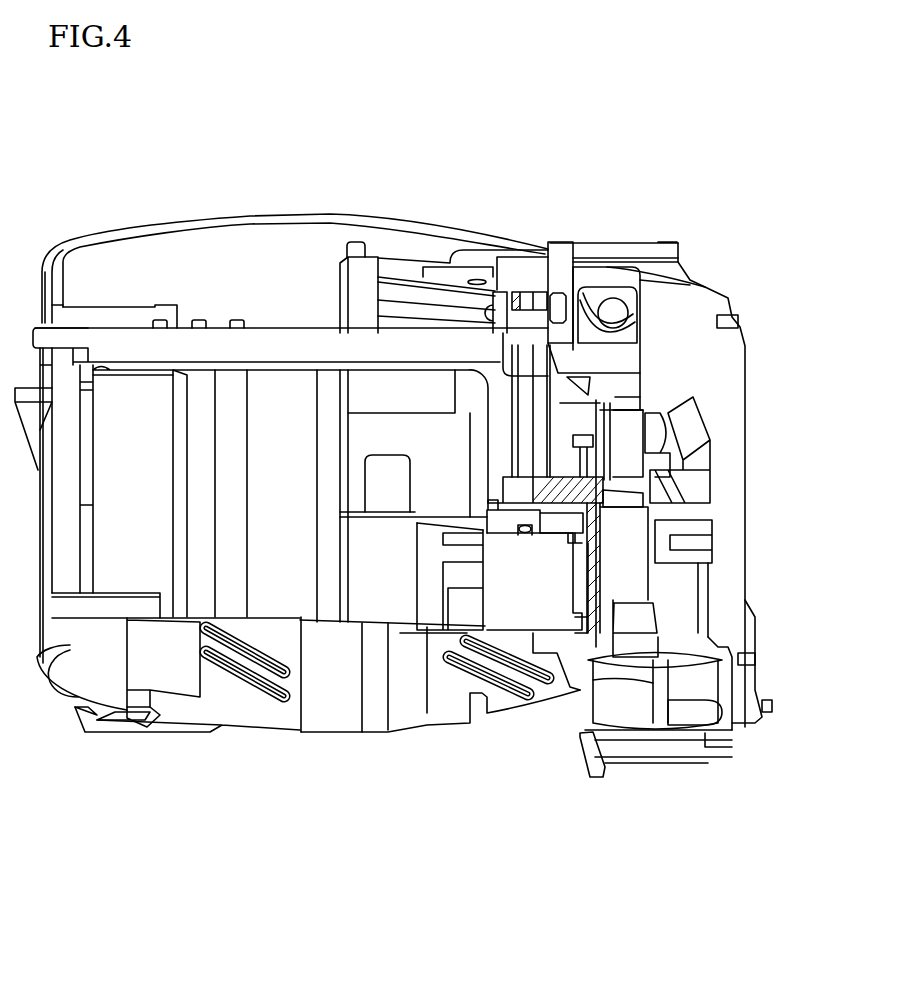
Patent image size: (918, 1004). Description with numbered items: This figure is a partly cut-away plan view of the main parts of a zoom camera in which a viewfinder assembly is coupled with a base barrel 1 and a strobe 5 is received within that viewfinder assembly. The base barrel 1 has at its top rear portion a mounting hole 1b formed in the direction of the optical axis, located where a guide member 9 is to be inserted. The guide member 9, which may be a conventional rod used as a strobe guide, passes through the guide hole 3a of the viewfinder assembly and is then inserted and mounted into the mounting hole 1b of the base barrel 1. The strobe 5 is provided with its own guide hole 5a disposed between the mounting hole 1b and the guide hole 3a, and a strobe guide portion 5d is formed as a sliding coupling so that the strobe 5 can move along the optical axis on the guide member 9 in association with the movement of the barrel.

The base barrel 1 is at (132, 755).
The mounting hole 1b is at (527, 287).
The strobe guide portion 5d is at (527, 345).
The guide member 9 is at (527, 418).
The strobe 5 is at (635, 572).
The guide hole 5a is at (478, 555).
The guide hole 3a is at (528, 533).